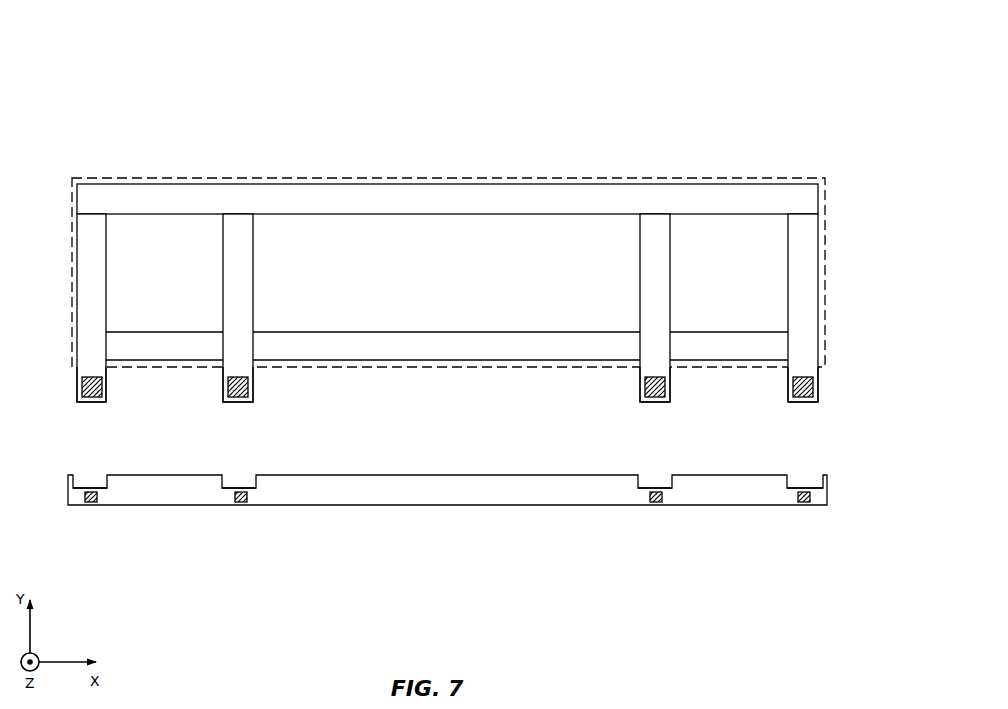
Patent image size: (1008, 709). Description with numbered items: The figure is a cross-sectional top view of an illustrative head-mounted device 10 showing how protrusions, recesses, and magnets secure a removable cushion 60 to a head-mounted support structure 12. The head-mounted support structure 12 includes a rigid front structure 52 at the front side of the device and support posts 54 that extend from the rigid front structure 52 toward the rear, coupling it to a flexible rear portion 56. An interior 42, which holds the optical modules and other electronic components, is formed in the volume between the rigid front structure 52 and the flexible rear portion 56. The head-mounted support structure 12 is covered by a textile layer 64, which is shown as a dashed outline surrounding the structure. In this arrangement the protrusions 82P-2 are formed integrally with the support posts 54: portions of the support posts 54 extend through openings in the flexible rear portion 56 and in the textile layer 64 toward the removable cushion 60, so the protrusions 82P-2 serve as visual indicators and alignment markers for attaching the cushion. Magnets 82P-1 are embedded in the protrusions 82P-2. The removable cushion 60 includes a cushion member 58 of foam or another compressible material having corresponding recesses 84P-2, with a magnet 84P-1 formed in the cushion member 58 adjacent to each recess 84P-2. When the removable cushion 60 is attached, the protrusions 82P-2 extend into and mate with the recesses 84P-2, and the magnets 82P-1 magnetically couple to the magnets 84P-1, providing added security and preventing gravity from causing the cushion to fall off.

The electronic device 10 is at (136, 79).
The head-mounted support structure 12 is at (864, 289).
The interior 42 is at (419, 236).
The rigid front structure 52 is at (192, 196).
The support posts 54 is at (106, 270).
The flexible rear portion 56 is at (497, 342).
The cushion member 58 is at (523, 492).
The removable cushion 60 is at (864, 489).
The textile layer 64 is at (760, 178).
The magnets 82P-1 is at (82, 386).
The protrusions 82P-2 is at (119, 383).
The magnets 84P-1 is at (91, 505).
The recesses 84P-2 is at (92, 478).